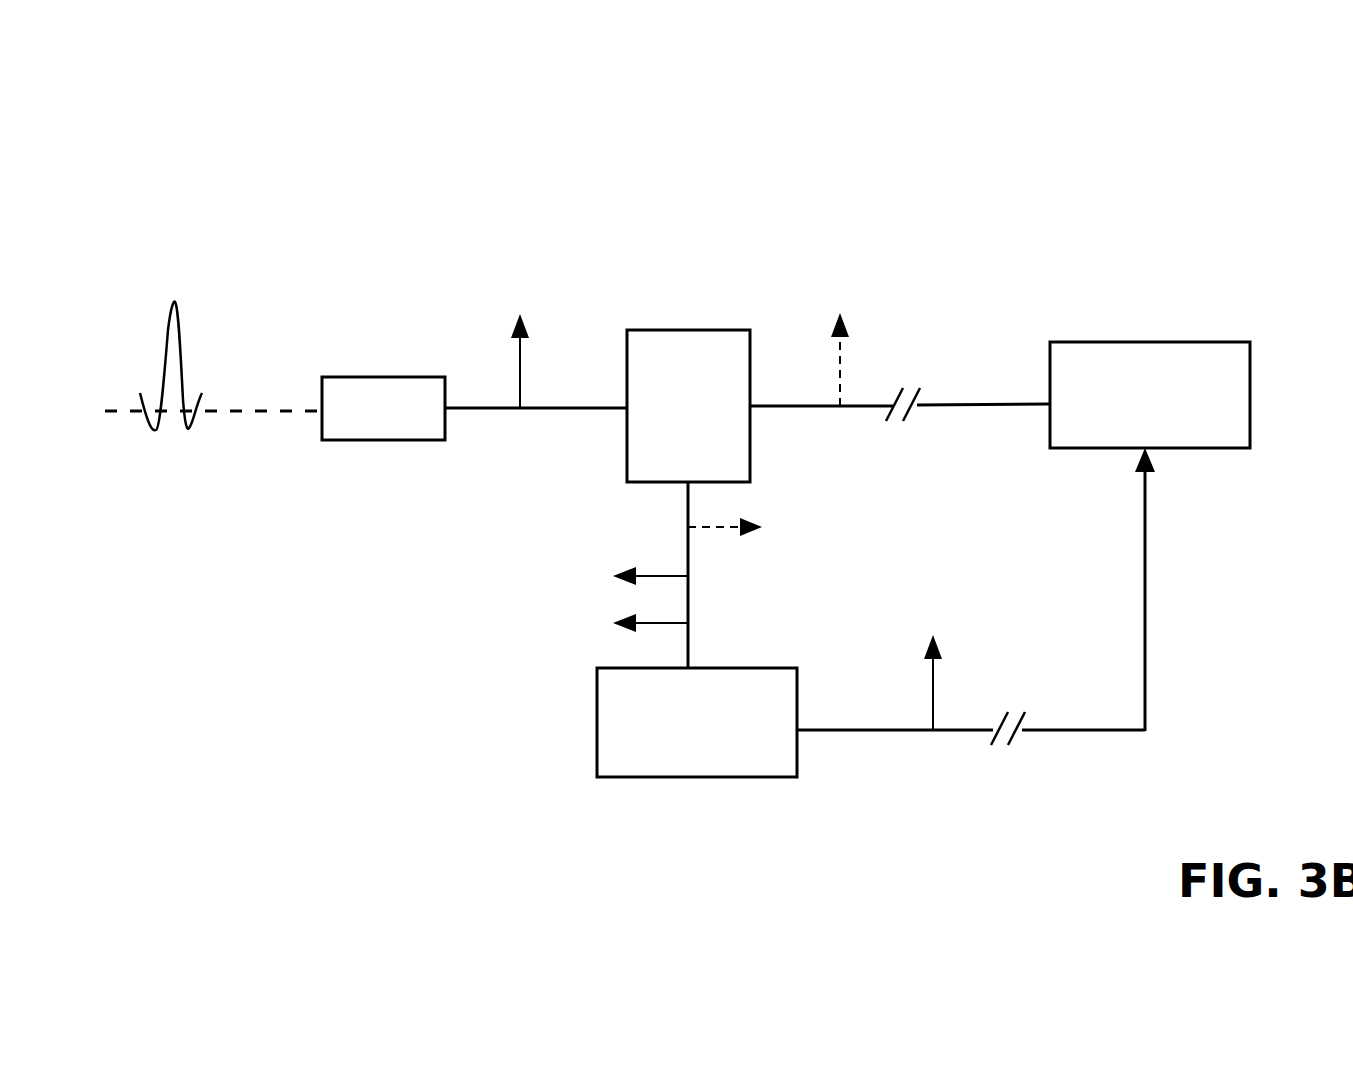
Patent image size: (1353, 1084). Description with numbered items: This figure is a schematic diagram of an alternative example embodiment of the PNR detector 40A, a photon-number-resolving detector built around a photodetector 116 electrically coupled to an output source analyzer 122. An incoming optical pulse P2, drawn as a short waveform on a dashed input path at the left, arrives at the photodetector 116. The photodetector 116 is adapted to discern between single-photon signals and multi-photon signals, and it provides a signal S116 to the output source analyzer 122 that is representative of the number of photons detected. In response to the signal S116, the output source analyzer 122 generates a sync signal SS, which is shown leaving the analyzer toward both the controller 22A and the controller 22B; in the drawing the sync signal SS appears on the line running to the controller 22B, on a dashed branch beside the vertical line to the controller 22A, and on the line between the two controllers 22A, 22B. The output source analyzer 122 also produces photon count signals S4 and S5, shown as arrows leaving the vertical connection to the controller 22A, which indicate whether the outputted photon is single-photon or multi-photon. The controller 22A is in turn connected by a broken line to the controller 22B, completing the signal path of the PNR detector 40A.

The PNR detector 40A is at (990, 188).
The optical pulse P2 is at (168, 350).
The photodetector 116 is at (413, 428).
The signal S116 is at (518, 347).
The output source analyzer 122 is at (717, 426).
The sync signal SS is at (838, 375).
The controller 22A is at (728, 743).
The controller 22B is at (1183, 414).
The photon count signal S4 is at (623, 570).
The photon count signal S5 is at (623, 617).